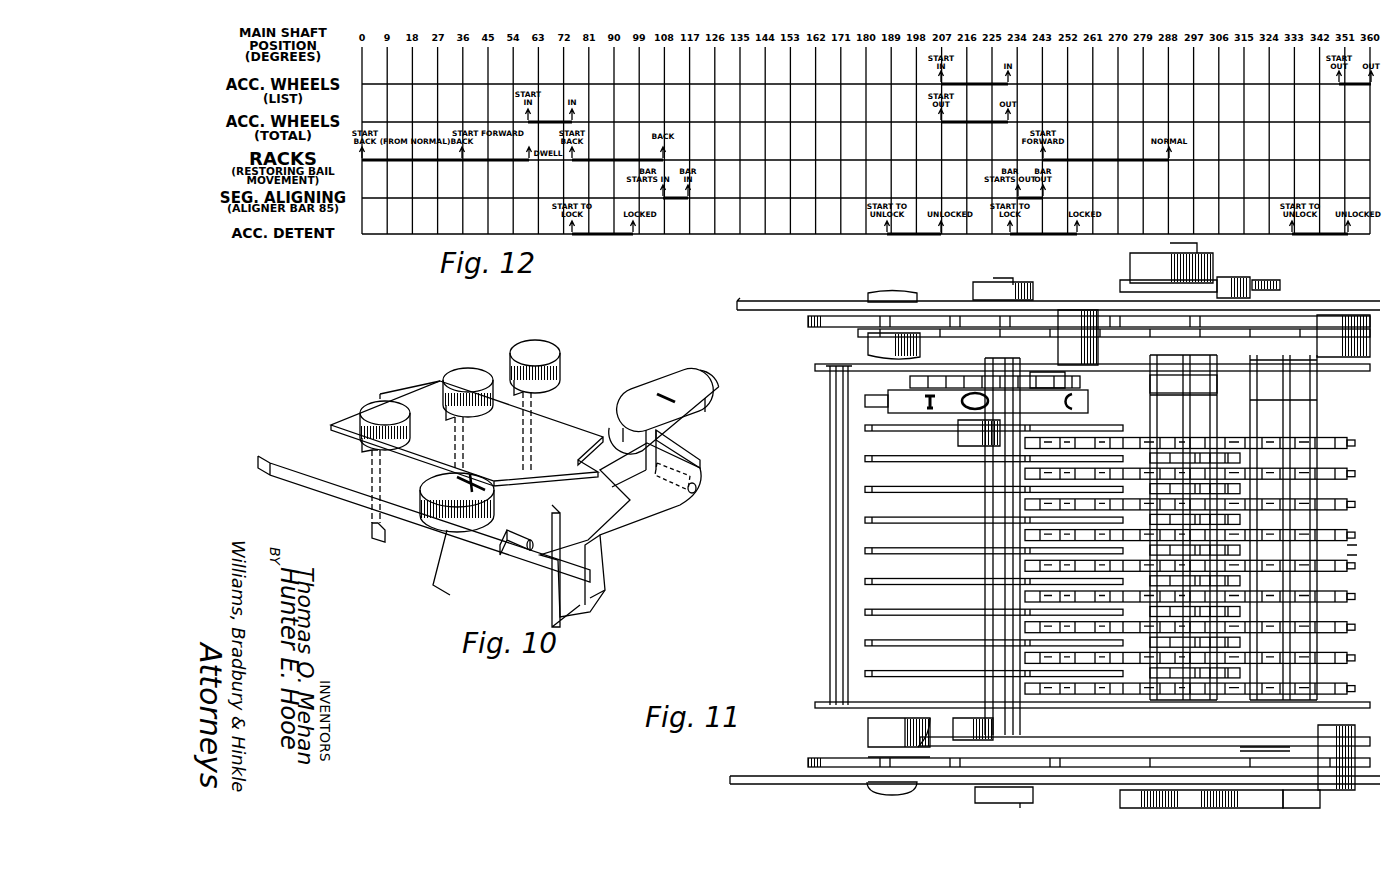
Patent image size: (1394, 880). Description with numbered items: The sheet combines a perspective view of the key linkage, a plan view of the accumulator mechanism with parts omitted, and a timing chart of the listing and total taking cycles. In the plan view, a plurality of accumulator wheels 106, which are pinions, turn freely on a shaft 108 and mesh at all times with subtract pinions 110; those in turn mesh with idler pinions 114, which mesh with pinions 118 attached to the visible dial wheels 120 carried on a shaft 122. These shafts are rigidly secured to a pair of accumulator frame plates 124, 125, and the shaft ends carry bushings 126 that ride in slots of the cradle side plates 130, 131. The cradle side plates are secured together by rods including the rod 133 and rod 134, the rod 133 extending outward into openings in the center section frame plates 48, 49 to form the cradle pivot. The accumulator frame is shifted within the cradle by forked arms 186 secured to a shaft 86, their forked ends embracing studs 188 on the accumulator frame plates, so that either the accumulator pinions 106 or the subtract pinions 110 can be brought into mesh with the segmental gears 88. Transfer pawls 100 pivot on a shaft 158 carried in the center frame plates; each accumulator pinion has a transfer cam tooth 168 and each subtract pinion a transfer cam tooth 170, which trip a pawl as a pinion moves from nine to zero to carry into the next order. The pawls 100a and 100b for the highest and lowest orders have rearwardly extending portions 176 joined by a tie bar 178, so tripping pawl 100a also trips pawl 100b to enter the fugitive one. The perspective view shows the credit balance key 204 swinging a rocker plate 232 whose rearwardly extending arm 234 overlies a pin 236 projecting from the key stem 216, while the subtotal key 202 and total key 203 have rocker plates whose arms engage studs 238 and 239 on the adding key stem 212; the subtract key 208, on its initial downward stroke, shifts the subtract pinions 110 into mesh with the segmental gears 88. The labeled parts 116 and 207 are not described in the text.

In FIG. 11, the center section frame plate 48 is at (780, 292).
In FIG. 11, the center section frame plate 49 is at (750, 778).
In FIG. 11, the shaft 86 is at (1170, 248).
In FIG. 11, the segmental gears 88 is at (1025, 535).
In FIG. 11, the transfer pawls 100 is at (900, 498).
In FIG. 11, the transfer pawl 100a is at (815, 367).
In FIG. 11, the transfer pawl 100b is at (840, 708).
In FIG. 11, the accumulator wheels 106 is at (1356, 540).
In FIG. 11, the shaft 108 is at (1300, 460).
In FIG. 11, the subtract pinions 110 is at (1123, 663).
In FIG. 11, the idler pinions 114 is at (1048, 372).
In FIG. 11, the post 116 is at (1097, 330).
In FIG. 11, the pinions 118 is at (910, 382).
In FIG. 11, the visible dial wheels 120 is at (865, 400).
In FIG. 11, the shaft 122 is at (958, 435).
In FIG. 11, the accumulator frame plate 124 is at (925, 735).
In FIG. 11, the accumulator frame plate 125 is at (1027, 340).
In FIG. 11, the bushings 126 is at (1270, 746).
In FIG. 11, the cradle side plate 130 is at (808, 763).
In FIG. 11, the cradle side plate 131 is at (808, 322).
In FIG. 11, the rod 133 is at (868, 344).
In FIG. 11, the rod 134 is at (1362, 310).
In FIG. 11, the shaft 158 is at (990, 565).
In FIG. 11, the transfer cam tooth 168 is at (1317, 366).
In FIG. 11, the transfer cam tooth 170 is at (1150, 360).
In FIG. 11, the rearwardly extending portions 176 is at (820, 366).
In FIG. 11, the tie bar 178 is at (830, 495).
In FIG. 11, the forked arms 186 is at (1280, 285).
In FIG. 11, the studs 188 is at (1235, 277).
In FIG. 10, the subtotal key 202 is at (388, 401).
In FIG. 10, the total key 203 is at (462, 368).
In FIG. 10, the credit balance key 204 is at (552, 343).
In FIG. 10, the roller 207 is at (430, 520).
In FIG. 10, the subtract key 208 is at (684, 388).
In FIG. 10, the adding key stem 212 is at (545, 590).
In FIG. 10, the key stem 216 is at (695, 450).
In FIG. 10, the rocker plate 232 is at (345, 448).
In FIG. 10, the rearwardly extending arm 234 is at (690, 470).
In FIG. 10, the pin 236 is at (697, 489).
In FIG. 10, the stud 238 is at (515, 555).
In FIG. 10, the stud 239 is at (630, 528).